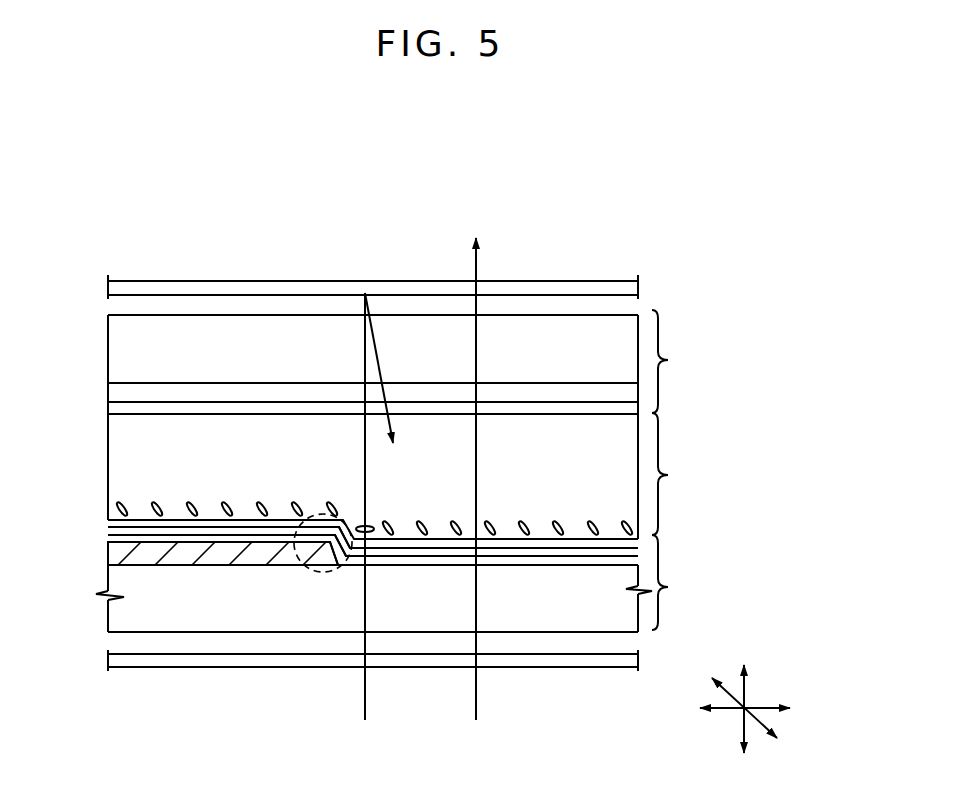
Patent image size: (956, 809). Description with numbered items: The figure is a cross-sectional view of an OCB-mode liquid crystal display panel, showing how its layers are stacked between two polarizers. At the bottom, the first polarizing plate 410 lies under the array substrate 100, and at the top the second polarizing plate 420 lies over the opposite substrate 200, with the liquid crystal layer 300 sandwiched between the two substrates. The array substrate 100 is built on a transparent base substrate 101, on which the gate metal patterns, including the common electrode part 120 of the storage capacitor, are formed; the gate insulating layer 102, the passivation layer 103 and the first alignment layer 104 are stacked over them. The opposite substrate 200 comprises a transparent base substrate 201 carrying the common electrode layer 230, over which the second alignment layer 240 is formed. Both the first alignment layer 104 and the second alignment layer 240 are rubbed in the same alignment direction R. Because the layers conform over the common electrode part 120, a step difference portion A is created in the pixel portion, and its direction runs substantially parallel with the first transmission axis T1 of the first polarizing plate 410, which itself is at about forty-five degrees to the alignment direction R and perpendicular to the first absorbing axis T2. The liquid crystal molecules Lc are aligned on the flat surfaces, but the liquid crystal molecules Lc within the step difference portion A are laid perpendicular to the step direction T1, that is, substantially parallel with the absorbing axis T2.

The second polarizing plate 420 is at (110, 290).
The first polarizing plate 410 is at (110, 659).
The base substrate 201 is at (112, 348).
The common electrode layer 230 is at (112, 393).
The second alignment layer 240 is at (112, 412).
The liquid crystal layer 300 is at (668, 475).
The opposite substrate 200 is at (668, 360).
The array substrate 100 is at (668, 587).
The first alignment layer 104 is at (112, 523).
The passivation layer 103 is at (112, 531).
The gate insulating layer 102 is at (112, 540).
The common electrode part 120 is at (112, 560).
The base substrate 101 is at (112, 613).
The step difference portion A is at (347, 516).
The liquid crystal molecules Lc is at (369, 525).
The first transmission axis T1 is at (745, 696).
The first absorbing axis T2 is at (758, 708).
The alignment direction R is at (737, 696).